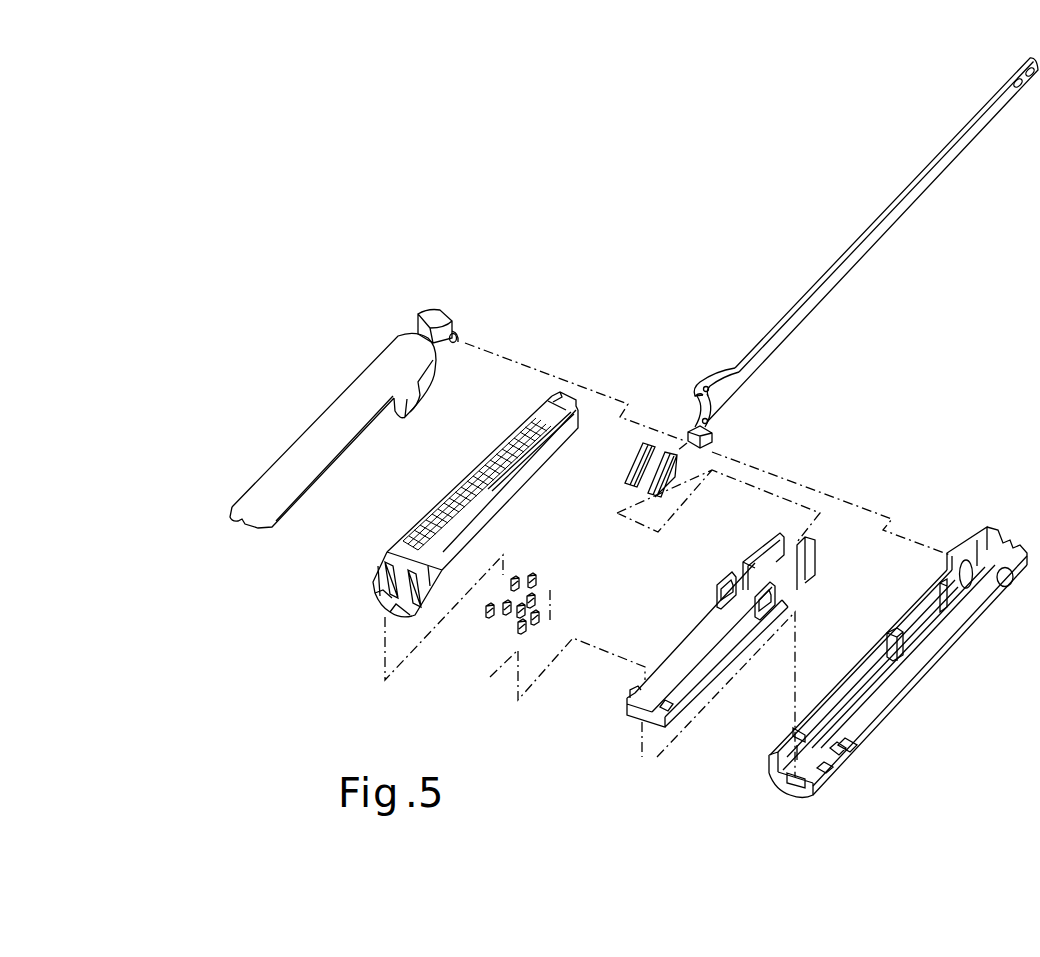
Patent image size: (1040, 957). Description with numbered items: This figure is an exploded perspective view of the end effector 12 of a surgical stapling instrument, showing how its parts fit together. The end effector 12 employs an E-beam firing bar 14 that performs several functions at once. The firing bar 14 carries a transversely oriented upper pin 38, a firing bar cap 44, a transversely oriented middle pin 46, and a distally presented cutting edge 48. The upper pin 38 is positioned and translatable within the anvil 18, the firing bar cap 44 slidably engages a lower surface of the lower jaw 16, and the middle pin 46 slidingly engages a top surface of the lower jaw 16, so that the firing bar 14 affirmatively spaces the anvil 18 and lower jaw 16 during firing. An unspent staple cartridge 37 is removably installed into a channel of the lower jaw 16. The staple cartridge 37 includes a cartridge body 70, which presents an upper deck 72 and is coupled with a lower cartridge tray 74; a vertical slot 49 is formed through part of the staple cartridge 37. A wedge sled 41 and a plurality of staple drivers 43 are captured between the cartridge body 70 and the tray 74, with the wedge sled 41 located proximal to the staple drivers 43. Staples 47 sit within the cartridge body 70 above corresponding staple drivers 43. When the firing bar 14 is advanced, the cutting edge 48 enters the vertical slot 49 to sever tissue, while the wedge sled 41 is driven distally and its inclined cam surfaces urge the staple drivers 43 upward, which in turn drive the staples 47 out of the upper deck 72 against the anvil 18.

The end effector 12 is at (356, 213).
The firing bar 14 is at (893, 196).
The lower jaw 16 is at (890, 710).
The anvil 18 is at (345, 410).
The staple cartridge 37 is at (357, 598).
The upper pin 38 is at (726, 370).
The wedge sled 41 is at (625, 465).
The staple drivers 43 is at (518, 615).
The firing bar cap 44 is at (703, 437).
The middle pin 46 is at (710, 426).
The staples 47 is at (538, 621).
The cutting edge 48 is at (695, 392).
The vertical slot 49 is at (538, 420).
The cartridge body 70 is at (532, 484).
The upper deck 72 is at (447, 497).
The cartridge tray 74 is at (790, 580).